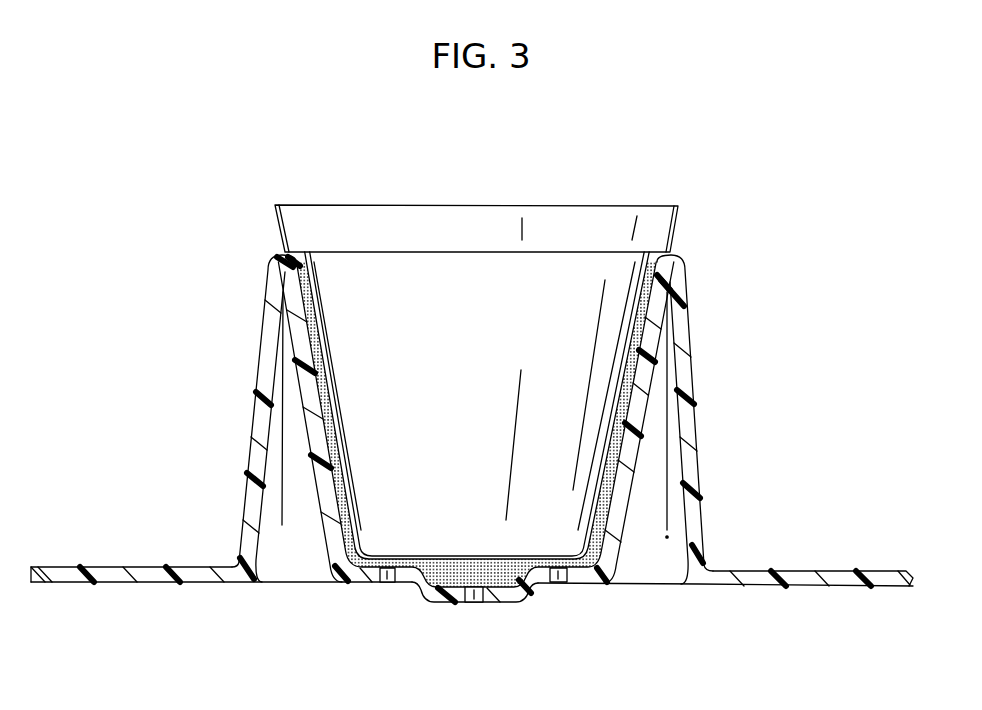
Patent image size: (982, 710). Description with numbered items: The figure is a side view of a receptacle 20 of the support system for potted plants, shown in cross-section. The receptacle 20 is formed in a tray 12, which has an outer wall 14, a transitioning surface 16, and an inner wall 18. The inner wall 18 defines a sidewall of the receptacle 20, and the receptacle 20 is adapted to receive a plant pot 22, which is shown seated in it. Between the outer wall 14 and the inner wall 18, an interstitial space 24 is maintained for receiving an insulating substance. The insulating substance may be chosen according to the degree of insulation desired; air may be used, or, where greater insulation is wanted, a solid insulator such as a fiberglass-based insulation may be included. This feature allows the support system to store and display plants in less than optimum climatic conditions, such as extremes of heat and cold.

The tray 12 is at (823, 572).
The outer wall 14 is at (693, 384).
The transitioning surface 16 is at (674, 254).
The inner wall 18 is at (628, 456).
The receptacle 20 is at (684, 222).
The plant pot 22 is at (275, 204).
The interstitial space 24 is at (667, 551).